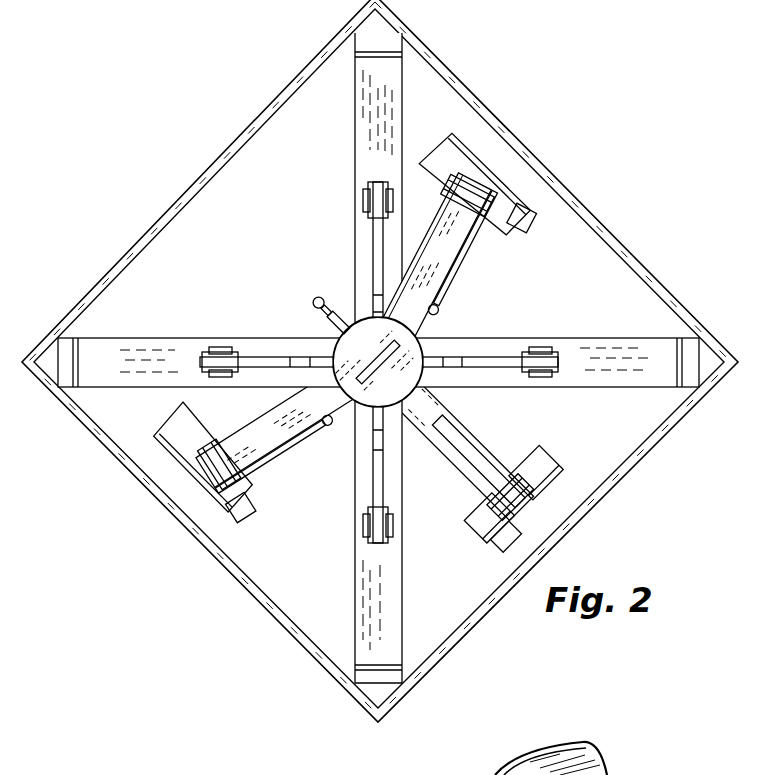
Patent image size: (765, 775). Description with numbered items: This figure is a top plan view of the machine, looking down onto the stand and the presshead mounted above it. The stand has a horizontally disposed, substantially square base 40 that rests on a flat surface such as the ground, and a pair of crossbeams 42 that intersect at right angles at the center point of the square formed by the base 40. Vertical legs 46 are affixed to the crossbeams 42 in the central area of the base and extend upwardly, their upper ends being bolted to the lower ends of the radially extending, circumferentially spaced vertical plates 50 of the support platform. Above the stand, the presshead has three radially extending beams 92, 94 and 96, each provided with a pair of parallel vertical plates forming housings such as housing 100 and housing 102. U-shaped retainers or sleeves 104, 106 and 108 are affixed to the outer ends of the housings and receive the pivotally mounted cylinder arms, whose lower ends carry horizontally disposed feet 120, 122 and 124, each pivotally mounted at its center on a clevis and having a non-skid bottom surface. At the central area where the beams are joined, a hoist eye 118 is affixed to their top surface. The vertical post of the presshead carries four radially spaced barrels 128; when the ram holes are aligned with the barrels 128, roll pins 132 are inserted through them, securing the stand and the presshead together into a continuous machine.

The base 40 is at (313, 75).
The crossbeams 42 is at (382, 72).
The vertical legs 46 is at (364, 203).
The vertical plates 50 is at (372, 228).
The beam 92 is at (473, 438).
The beam 94 is at (423, 267).
The beam 96 is at (280, 423).
The housing 100 is at (471, 243).
The housing 102 is at (268, 455).
The U-shaped retainer 104 is at (533, 522).
The U-shaped retainer 106 is at (455, 165).
The U-shaped retainer 108 is at (180, 440).
The hoist eye 118 is at (390, 395).
The foot 120 is at (507, 535).
The foot 122 is at (520, 208).
The foot 124 is at (222, 498).
The barrels 128 is at (348, 315).
The roll pins 132 is at (316, 298).